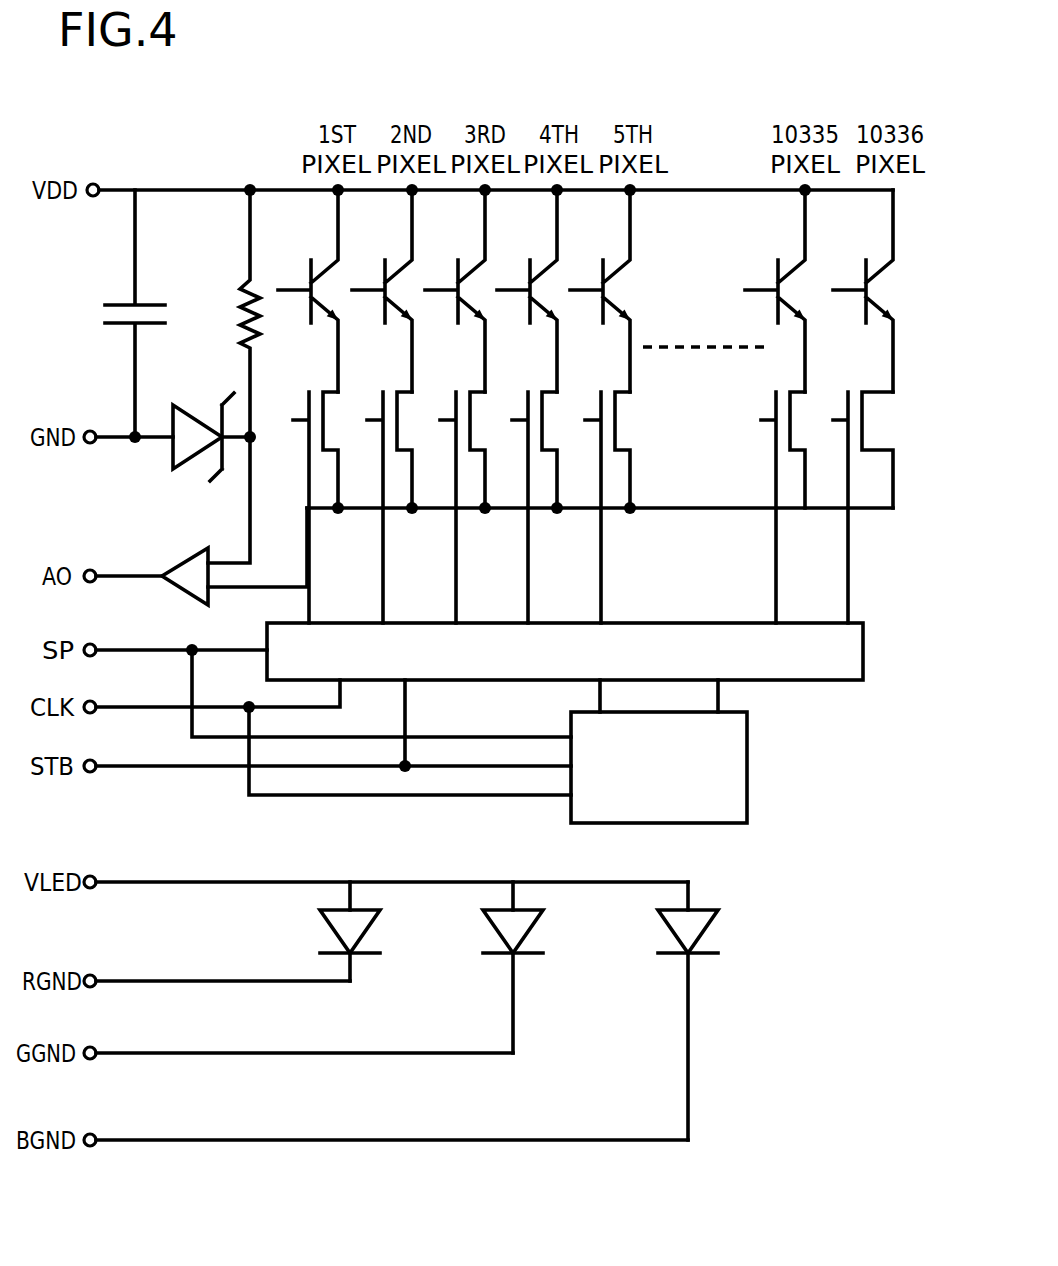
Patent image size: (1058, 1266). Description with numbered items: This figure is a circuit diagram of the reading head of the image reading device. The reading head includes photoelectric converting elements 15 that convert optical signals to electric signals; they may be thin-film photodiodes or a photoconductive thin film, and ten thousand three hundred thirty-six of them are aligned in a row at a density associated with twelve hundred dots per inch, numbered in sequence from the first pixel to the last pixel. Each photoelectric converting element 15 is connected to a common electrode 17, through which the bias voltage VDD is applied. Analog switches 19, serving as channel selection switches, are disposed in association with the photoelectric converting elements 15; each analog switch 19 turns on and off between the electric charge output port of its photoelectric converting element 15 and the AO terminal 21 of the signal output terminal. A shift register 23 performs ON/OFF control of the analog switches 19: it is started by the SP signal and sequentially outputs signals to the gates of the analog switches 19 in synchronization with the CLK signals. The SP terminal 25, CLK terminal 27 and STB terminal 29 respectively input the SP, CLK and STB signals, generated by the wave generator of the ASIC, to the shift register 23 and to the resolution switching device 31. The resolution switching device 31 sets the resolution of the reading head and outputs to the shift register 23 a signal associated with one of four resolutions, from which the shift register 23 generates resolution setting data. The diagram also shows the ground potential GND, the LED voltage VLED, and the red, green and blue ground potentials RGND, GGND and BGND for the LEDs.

The photoelectric converting element 15 is at (310, 290).
The common electrode 17 is at (93, 183).
The analog switch 19 is at (308, 412).
The AO terminal 21 is at (683, 512).
The shift register 23 is at (840, 682).
The SP terminal 25 is at (96, 645).
The CLK terminal 27 is at (96, 712).
The STB terminal 29 is at (96, 771).
The resolution switching device 31 is at (747, 783).